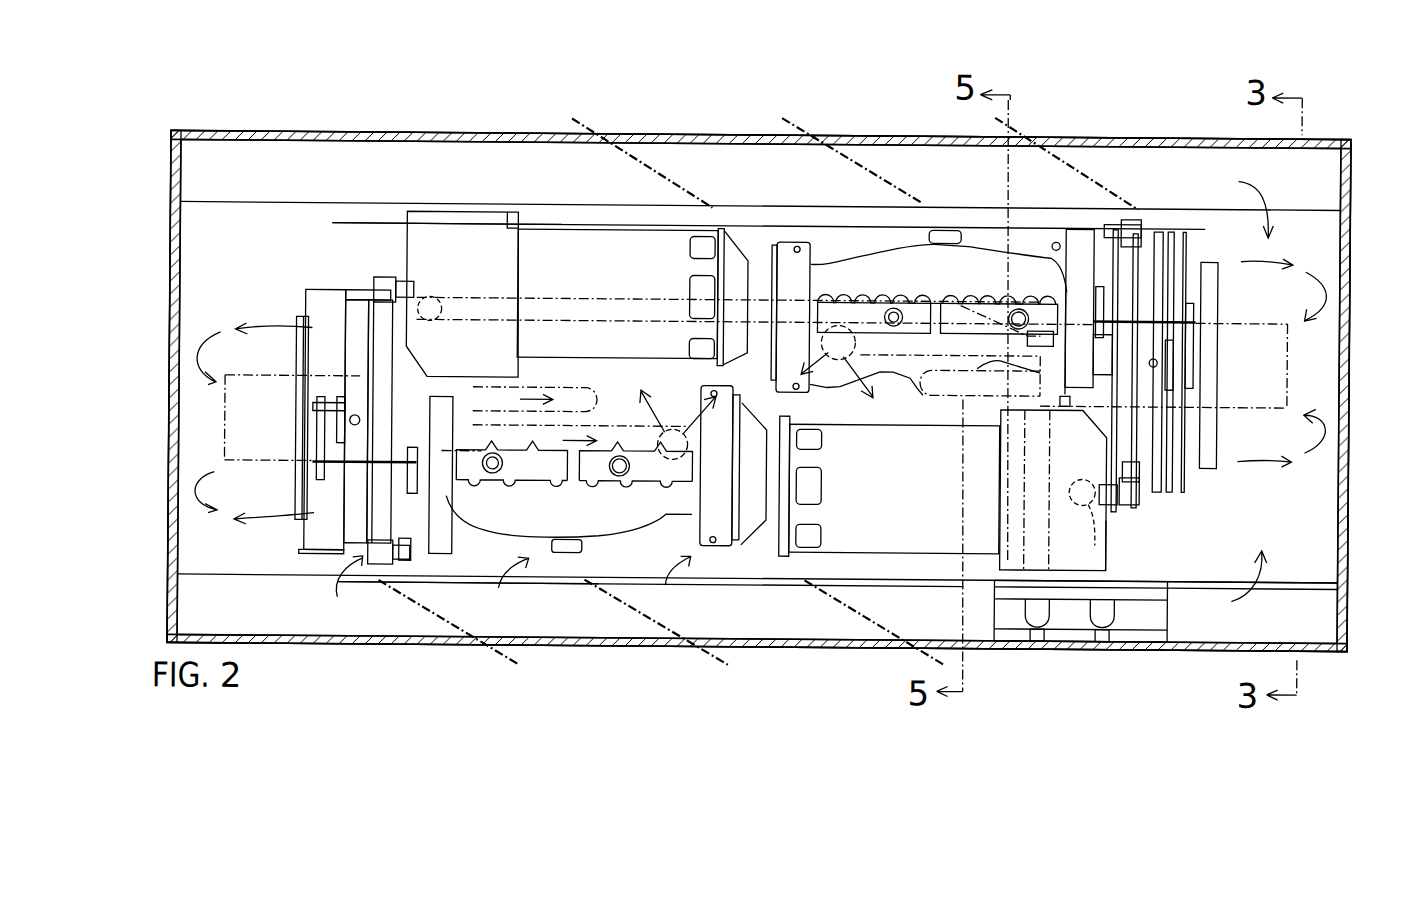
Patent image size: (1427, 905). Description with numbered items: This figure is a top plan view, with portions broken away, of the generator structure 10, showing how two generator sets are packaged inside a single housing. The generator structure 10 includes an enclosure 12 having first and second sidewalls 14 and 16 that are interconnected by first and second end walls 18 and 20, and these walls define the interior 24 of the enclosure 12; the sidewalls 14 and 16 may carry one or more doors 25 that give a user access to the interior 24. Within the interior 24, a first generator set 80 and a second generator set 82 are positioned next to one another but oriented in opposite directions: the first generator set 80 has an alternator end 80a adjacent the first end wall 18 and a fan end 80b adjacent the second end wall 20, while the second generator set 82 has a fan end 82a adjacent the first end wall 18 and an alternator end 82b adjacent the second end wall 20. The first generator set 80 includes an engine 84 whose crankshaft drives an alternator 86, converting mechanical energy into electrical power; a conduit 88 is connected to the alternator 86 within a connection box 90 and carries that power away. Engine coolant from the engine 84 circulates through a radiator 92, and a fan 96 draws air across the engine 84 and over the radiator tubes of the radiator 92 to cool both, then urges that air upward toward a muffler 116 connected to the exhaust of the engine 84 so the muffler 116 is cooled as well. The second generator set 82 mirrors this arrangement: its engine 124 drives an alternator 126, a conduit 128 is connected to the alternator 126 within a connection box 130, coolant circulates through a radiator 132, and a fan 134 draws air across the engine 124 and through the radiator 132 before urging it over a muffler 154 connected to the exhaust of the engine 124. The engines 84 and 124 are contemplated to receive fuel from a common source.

The generator structure 10 is at (418, 745).
The enclosure 12 is at (1350, 134).
The first sidewall 14 is at (771, 547).
The second sidewall 16 is at (495, 194).
The first end wall 18 is at (171, 301).
The second end wall 20 is at (1345, 357).
The interior 24 is at (267, 242).
The doors 25 is at (573, 120).
The first generator set 80 is at (774, 252).
The alternator end 80a is at (404, 255).
The fan end 80b is at (1216, 253).
The second generator set 82 is at (794, 581).
The fan end 82a is at (298, 531).
The alternator end 82b is at (1109, 542).
The engine 84 is at (986, 245).
The alternator 86 is at (554, 220).
The conduit 88 is at (1032, 605).
The connection box 90 is at (406, 271).
The radiator 92 is at (1132, 260).
The fan 96 is at (1208, 453).
The muffler 116 is at (1290, 373).
The engine 124 is at (534, 545).
The alternator 126 is at (916, 502).
The conduit 128 is at (1106, 542).
The connection box 130 is at (1108, 452).
The radiator 132 is at (380, 346).
The fan 134 is at (296, 312).
The muffler 154 is at (225, 429).